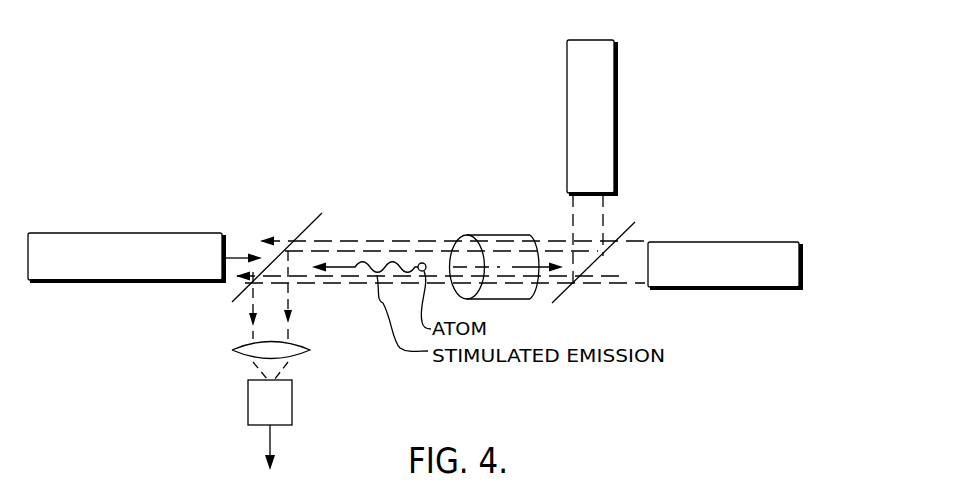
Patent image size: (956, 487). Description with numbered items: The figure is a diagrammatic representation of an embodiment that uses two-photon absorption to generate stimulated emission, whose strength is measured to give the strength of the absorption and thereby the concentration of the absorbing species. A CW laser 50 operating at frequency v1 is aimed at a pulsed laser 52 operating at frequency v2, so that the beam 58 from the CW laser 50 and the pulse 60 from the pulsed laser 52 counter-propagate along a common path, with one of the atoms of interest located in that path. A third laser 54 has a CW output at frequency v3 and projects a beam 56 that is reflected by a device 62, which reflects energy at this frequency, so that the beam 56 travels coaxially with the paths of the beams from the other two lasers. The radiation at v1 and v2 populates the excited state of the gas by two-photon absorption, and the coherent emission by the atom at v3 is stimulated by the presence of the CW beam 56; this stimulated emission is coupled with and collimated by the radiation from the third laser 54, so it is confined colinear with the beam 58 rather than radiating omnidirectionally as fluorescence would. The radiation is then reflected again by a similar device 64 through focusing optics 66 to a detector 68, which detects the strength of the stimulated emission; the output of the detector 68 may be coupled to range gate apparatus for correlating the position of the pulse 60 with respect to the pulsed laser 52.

The CW laser 50 is at (735, 242).
The pulsed laser 52 is at (178, 233).
The third laser 54 is at (617, 97).
The beam 56 is at (603, 227).
The beam 58 is at (333, 241).
The pulse 60 is at (500, 235).
The device 62 is at (563, 296).
The similar device 64 is at (313, 222).
The focusing optics 66 is at (305, 349).
The detector 68 is at (292, 405).